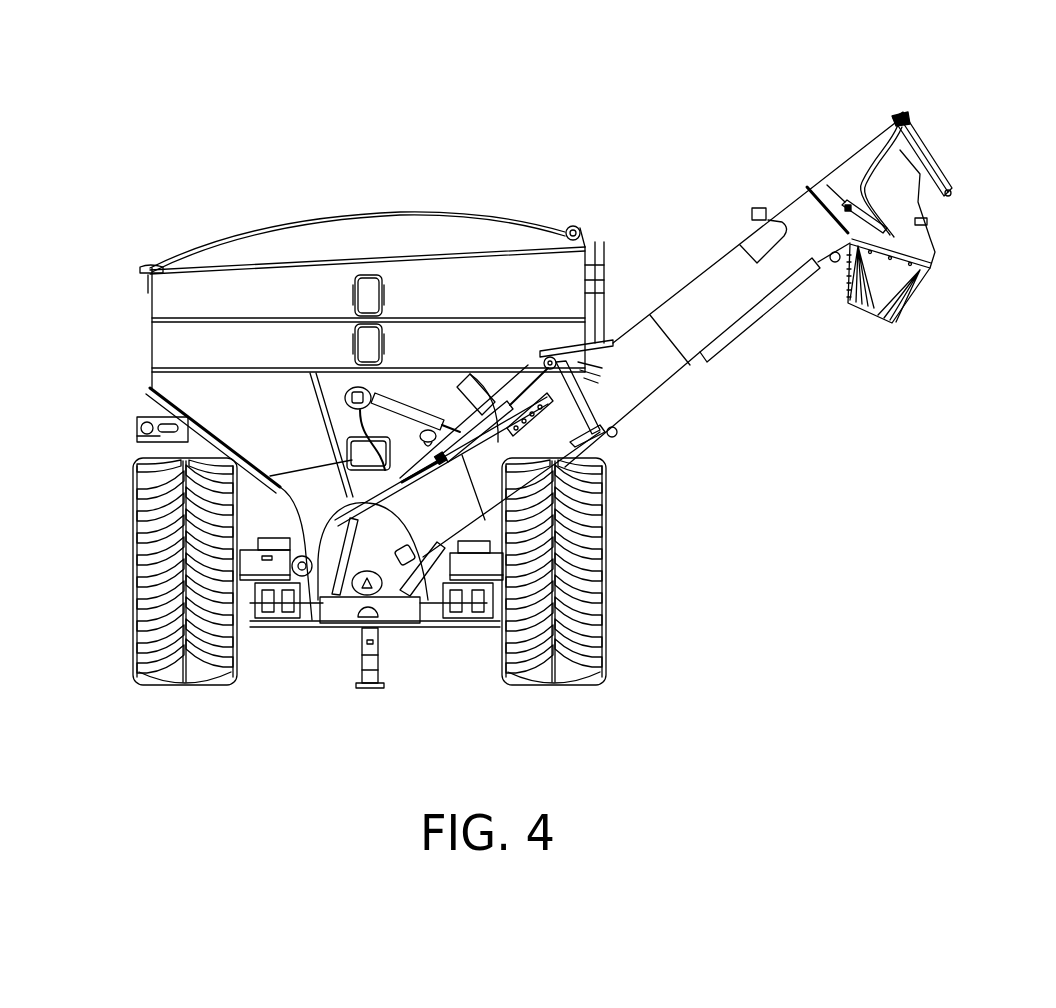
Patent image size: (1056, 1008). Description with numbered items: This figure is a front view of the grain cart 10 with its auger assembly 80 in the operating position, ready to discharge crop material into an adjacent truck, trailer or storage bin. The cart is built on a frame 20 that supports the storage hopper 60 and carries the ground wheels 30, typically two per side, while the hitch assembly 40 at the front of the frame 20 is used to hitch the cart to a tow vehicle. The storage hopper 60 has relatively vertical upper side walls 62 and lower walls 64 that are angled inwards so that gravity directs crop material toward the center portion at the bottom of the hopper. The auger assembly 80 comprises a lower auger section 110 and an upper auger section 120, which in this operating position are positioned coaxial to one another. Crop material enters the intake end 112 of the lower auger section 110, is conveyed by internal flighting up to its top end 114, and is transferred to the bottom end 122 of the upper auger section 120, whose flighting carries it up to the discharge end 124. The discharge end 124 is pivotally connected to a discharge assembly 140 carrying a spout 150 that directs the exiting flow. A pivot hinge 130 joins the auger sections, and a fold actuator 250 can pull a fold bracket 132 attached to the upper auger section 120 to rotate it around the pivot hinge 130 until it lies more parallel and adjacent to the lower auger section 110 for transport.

The grain cart 10 is at (496, 117).
The frame 20 is at (475, 627).
The ground wheels 30 is at (132, 602).
The hitch assembly 40 is at (337, 617).
The storage hopper 60 is at (150, 300).
The upper side walls 62 is at (150, 327).
The lower walls 64 is at (153, 403).
The auger assembly 80 is at (757, 183).
The lower auger section 110 is at (538, 462).
The intake end 112 is at (448, 603).
The top end 114 is at (608, 438).
The upper auger section 120 is at (758, 263).
The bottom end 122 is at (614, 430).
The discharge end 124 is at (835, 188).
The pivot hinge 130 is at (550, 357).
The fold bracket 132 is at (512, 370).
The discharge assembly 140 is at (900, 180).
The spout 150 is at (910, 295).
The fold actuator 250 is at (465, 440).